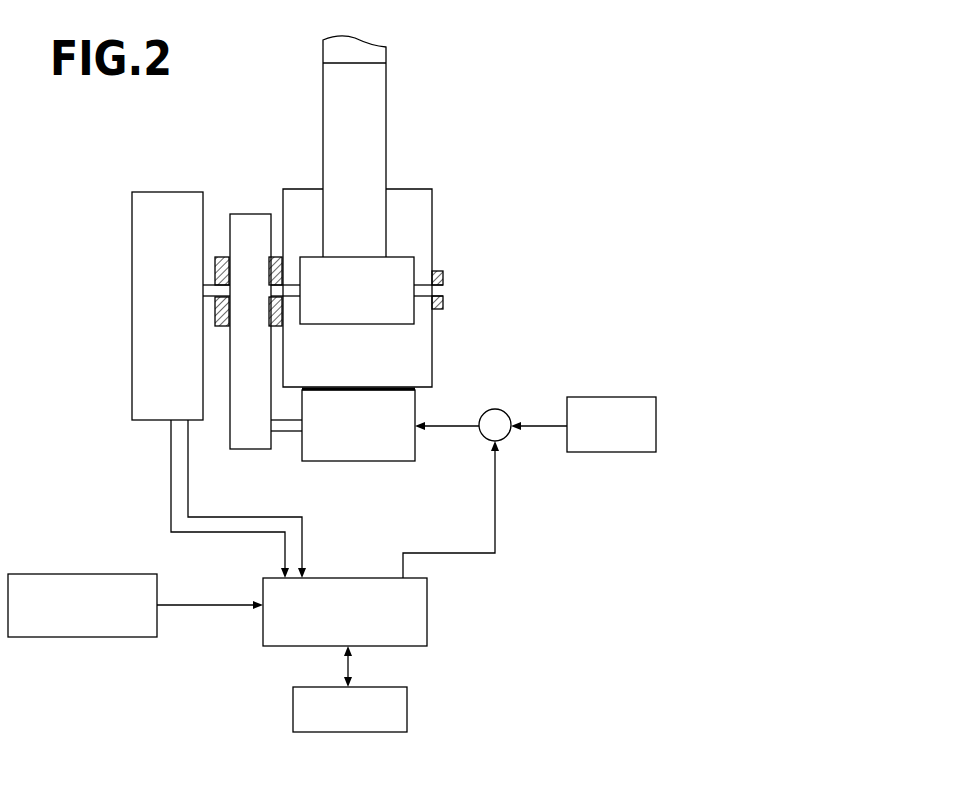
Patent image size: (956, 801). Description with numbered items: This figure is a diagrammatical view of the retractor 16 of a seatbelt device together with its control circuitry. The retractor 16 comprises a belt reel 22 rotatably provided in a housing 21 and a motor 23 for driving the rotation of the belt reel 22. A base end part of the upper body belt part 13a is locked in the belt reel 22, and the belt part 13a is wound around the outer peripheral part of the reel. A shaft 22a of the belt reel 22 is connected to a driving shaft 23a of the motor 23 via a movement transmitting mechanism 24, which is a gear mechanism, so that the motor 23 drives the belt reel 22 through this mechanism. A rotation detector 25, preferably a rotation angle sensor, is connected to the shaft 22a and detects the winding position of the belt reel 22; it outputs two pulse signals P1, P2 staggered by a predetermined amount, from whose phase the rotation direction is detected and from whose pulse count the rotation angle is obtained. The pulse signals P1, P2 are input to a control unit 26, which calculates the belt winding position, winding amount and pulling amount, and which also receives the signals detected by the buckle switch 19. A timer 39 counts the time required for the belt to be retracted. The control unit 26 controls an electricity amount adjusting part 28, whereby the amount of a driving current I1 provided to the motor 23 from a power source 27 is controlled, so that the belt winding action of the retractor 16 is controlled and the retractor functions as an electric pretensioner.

The upper body belt part 13a is at (370, 107).
The retractor 16 is at (480, 285).
The buckle switch 19 is at (60, 574).
The housing 21 is at (432, 210).
The belt reel 22 is at (402, 268).
The shaft 22a is at (293, 275).
The motor 23 is at (360, 461).
The driving shaft 23a is at (286, 427).
The movement transmitting mechanism 24 is at (237, 222).
The rotation detector 25 is at (152, 192).
The control unit 26 is at (427, 598).
The power source 27 is at (639, 397).
The electricity amount adjusting part 28 is at (497, 409).
The timer 39 is at (407, 697).
The driving current I1 is at (447, 426).
The pulse signal P1 is at (303, 555).
The pulse signal P2 is at (284, 555).